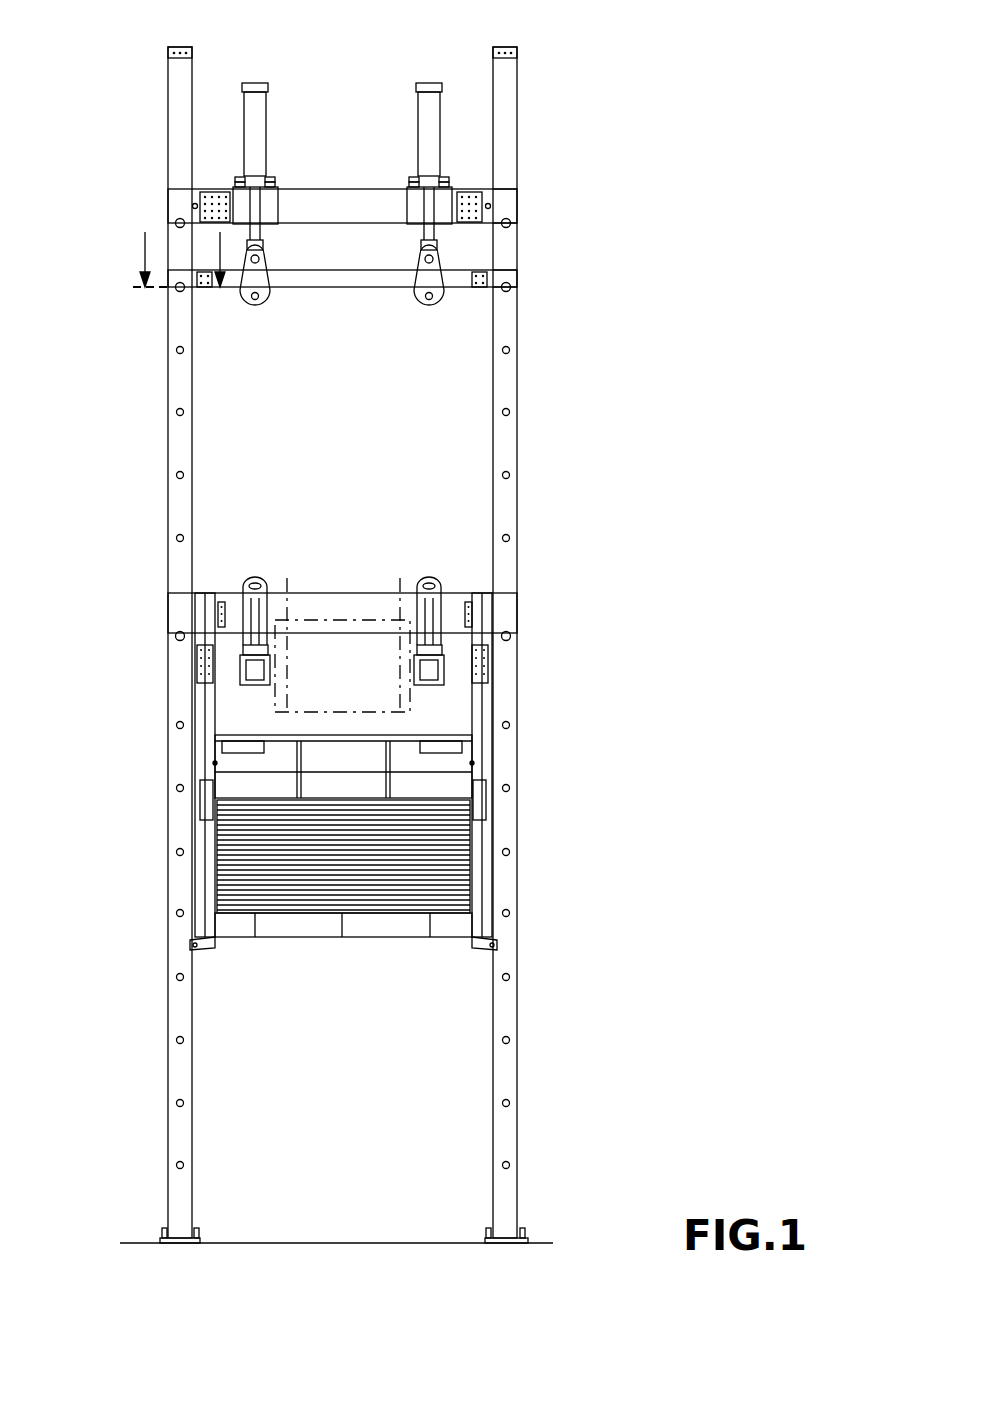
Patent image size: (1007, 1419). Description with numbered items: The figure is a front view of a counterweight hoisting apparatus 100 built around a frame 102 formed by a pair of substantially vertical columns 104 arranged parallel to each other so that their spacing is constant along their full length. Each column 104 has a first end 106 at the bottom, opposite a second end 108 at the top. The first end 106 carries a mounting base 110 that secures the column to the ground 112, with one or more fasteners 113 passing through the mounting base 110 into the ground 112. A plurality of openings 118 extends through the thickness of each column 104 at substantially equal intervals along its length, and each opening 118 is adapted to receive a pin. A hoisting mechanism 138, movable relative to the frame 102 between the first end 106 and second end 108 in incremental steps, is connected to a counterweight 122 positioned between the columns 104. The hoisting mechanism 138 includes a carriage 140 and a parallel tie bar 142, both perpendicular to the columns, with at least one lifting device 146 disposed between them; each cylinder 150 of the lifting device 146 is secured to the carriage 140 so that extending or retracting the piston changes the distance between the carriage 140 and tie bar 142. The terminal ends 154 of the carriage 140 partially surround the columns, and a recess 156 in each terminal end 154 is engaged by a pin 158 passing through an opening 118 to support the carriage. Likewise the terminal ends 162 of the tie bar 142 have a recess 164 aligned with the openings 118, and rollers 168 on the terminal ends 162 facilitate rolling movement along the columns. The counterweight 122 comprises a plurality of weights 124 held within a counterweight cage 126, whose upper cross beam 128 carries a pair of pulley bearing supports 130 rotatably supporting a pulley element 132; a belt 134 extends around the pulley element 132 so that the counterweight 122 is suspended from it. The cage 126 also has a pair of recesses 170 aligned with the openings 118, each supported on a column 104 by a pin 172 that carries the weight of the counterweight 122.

The hoisting apparatus 100 is at (622, 128).
The frame 102 is at (537, 58).
The columns 104 is at (193, 1152).
The first end 106 is at (193, 1210).
The second end 108 is at (192, 54).
The mounting base 110 is at (200, 1243).
The ground 112 is at (330, 1240).
The fasteners 113 is at (165, 1233).
The openings 118 is at (180, 412).
The counterweight 122 is at (343, 572).
The weights 124 is at (370, 892).
The counterweight cage 126 is at (487, 715).
The cross beam 128 is at (447, 577).
The pulley bearing supports 130 is at (433, 668).
The pulley element 132 is at (280, 698).
The belt 134 is at (288, 576).
The hoisting mechanism 138 is at (362, 315).
The carriage 140 is at (320, 205).
The tie bar 142 is at (330, 280).
The lifting device 146 is at (275, 78).
The cylinder 150 is at (258, 137).
The terminal ends 154 is at (510, 200).
The recess 156 is at (510, 220).
The pin 158 is at (510, 226).
The terminal ends 162 is at (507, 275).
The recess 164 is at (510, 288).
The rollers 168 is at (510, 291).
The recesses 170 is at (508, 628).
The pin 172 is at (510, 633).